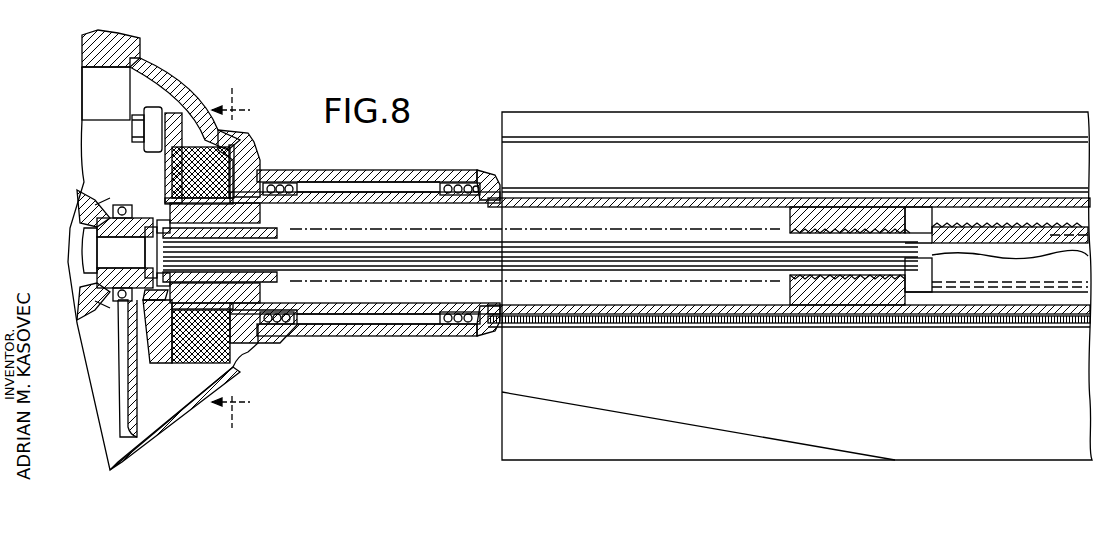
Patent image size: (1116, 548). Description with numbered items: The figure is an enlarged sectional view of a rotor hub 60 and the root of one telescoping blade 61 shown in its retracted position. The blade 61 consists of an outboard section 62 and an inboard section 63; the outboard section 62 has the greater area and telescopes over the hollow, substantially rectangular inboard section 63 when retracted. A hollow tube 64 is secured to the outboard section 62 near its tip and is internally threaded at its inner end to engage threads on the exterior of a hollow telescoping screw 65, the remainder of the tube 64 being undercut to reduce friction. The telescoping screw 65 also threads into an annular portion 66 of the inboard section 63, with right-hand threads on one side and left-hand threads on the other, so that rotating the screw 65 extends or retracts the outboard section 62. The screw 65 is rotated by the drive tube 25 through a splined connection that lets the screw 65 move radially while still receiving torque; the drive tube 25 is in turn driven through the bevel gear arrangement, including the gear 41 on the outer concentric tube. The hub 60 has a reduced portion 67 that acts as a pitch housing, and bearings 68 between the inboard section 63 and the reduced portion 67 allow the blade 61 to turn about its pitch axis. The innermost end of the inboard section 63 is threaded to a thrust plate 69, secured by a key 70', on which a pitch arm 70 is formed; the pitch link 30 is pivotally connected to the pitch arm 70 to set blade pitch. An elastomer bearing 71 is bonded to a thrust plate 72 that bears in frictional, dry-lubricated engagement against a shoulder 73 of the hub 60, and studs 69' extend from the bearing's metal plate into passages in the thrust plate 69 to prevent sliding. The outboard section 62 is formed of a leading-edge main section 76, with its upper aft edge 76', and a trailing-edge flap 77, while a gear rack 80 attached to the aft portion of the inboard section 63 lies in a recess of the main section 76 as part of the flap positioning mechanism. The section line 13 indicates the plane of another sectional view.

The section line 13 is at (234, 258).
The drive tube 25 is at (375, 268).
The pitch link 30 is at (154, 112).
The gear 41 is at (75, 220).
The hub 60 is at (186, 425).
The blade 61 is at (632, 112).
The outboard section 62 is at (772, 112).
The inboard section 63 is at (710, 198).
The hollow tube 64 is at (1010, 224).
The telescoping screw 65 is at (918, 212).
The annular portion 66 is at (794, 208).
The reduced portion 67 is at (408, 176).
The bearings 68 is at (466, 184).
The thrust plate 69 is at (164, 172).
The studs 69' is at (164, 254).
The pitch arm 70 is at (185, 104).
The key 70' is at (108, 325).
The elastomer bearing 71 is at (187, 372).
The thrust plate 72 is at (245, 345).
The shoulder 73 is at (255, 170).
The main section 76 is at (923, 377).
The upper aft edge 76' is at (698, 426).
The flap 77 is at (560, 451).
The gear rack 80 is at (626, 326).